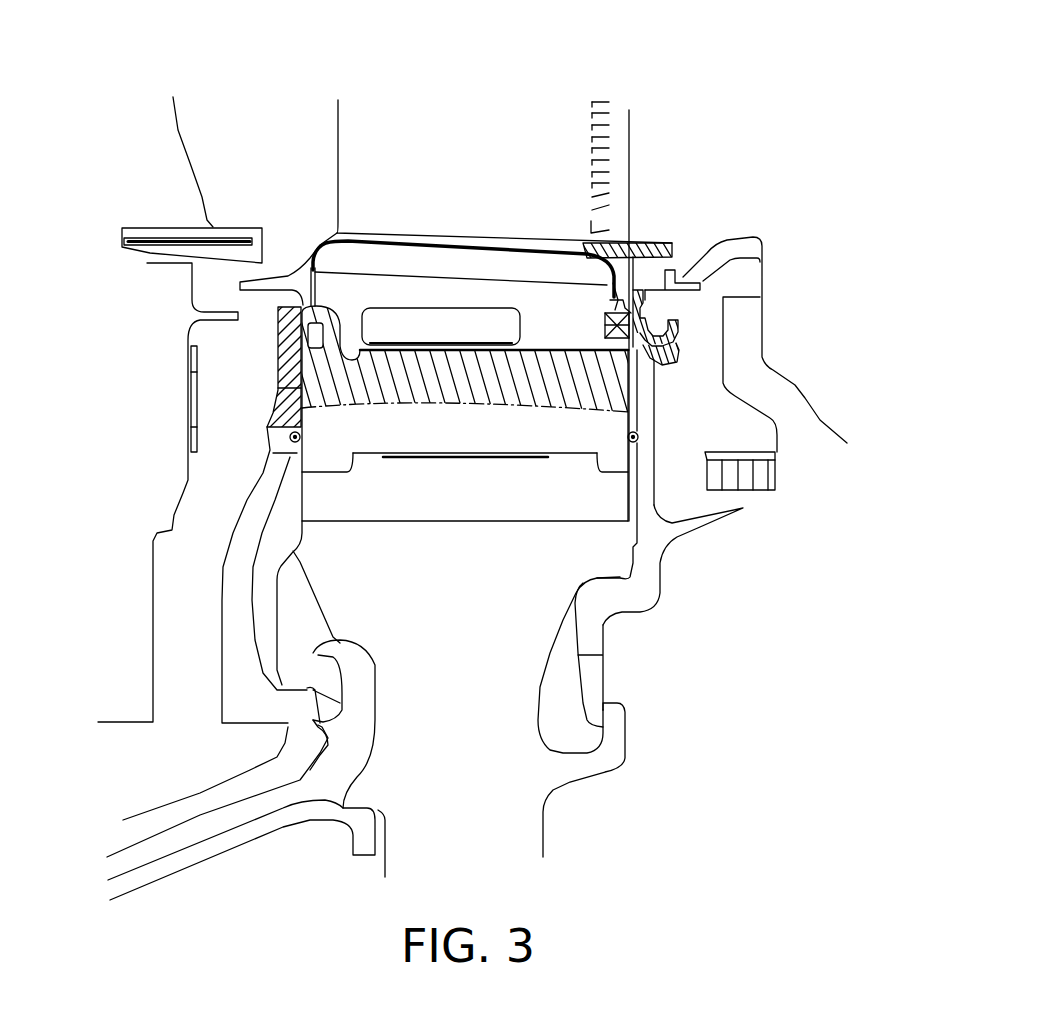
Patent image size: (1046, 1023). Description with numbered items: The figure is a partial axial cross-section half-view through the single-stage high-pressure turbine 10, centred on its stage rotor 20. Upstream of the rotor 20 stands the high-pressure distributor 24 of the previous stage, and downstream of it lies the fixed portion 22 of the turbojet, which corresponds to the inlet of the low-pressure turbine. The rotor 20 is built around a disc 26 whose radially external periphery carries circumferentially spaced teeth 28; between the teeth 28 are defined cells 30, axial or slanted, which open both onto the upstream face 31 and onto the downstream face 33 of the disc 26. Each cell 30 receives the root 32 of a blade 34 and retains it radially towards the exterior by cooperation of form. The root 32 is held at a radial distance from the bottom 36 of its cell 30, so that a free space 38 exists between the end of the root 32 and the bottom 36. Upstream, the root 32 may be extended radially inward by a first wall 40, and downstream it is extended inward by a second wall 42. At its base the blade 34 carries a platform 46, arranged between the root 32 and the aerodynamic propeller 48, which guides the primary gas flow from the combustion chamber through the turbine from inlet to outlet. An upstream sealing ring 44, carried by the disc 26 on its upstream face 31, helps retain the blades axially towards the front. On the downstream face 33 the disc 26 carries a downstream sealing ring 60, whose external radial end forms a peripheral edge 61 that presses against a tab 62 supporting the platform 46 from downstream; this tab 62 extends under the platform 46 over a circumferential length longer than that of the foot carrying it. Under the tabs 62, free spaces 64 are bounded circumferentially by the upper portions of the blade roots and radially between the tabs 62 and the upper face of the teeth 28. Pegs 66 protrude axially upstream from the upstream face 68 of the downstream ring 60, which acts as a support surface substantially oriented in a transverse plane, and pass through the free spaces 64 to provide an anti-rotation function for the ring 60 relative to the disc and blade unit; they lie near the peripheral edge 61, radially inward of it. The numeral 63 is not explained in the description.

The high-pressure turbine 10 is at (701, 90).
The stage rotor 20 is at (577, 802).
The fixed portion 22 is at (772, 344).
The high-pressure distributor 24 is at (221, 207).
The disc 26 is at (510, 693).
The teeth 28 is at (400, 397).
The cells 30 is at (305, 465).
The upstream face 31 is at (287, 450).
The root 32 is at (443, 440).
The downstream face 33 is at (633, 453).
The blade 34 is at (636, 175).
The bottom 36 is at (436, 518).
The free space 38 is at (381, 491).
The first wall 40 is at (340, 467).
The second wall 42 is at (608, 467).
The upstream sealing ring 44 is at (211, 707).
The platform 46 is at (450, 240).
The aerodynamic propeller 48 is at (352, 162).
The downstream sealing ring 60 is at (665, 580).
The peripheral edge 61 is at (640, 299).
The tab 62 is at (633, 285).
The surface 63 is at (648, 421).
The free spaces 64 is at (638, 365).
The pegs 66 is at (610, 340).
The upstream face 68 is at (632, 390).